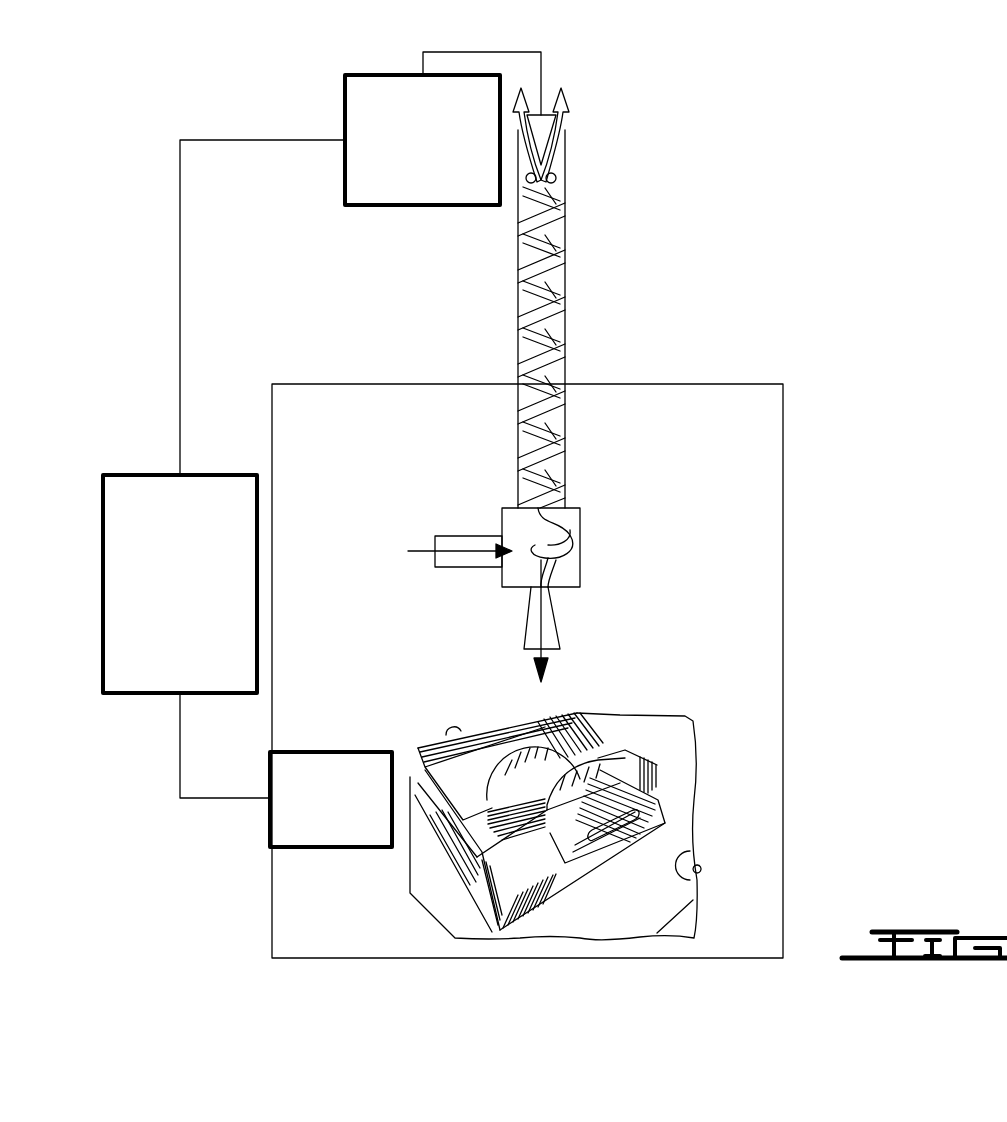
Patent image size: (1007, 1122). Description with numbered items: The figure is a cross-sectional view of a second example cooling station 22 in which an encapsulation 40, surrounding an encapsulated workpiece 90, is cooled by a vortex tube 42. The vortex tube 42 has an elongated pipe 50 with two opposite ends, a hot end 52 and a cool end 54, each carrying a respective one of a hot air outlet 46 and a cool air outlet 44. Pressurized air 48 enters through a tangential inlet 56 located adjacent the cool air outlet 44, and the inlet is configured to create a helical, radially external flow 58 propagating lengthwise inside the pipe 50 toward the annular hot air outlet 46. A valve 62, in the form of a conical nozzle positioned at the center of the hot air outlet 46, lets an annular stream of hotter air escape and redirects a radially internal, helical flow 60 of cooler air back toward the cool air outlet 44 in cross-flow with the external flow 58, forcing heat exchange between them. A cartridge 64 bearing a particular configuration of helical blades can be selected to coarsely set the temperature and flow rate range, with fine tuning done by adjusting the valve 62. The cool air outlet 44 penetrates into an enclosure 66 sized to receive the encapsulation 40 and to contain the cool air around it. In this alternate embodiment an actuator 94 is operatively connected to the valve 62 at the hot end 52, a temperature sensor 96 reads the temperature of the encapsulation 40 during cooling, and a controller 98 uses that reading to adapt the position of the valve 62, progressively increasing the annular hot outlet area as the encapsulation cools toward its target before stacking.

The cooling station 22 is at (864, 236).
The encapsulation 40 is at (635, 753).
The vortex tube 42 is at (606, 294).
The cool air jet / cool air outlet 44 is at (557, 670).
The hot air jet / hot air outlet 46 is at (567, 100).
The pressurized air 48 is at (422, 550).
The elongated pipe 50 is at (565, 430).
The hot end 52 is at (567, 140).
The cool end 54 is at (523, 632).
The tangential inlet 56 is at (462, 536).
The radially external helical flow 58 is at (518, 318).
The radially internal helical flow 60 is at (537, 350).
The valve 62 is at (549, 110).
The cartridge 64 is at (580, 556).
The enclosure 66 is at (783, 609).
The encapsulated workpiece 90 is at (653, 810).
The actuator 94 is at (345, 108).
The temperature sensor 96 is at (330, 847).
The controller 98 is at (135, 475).